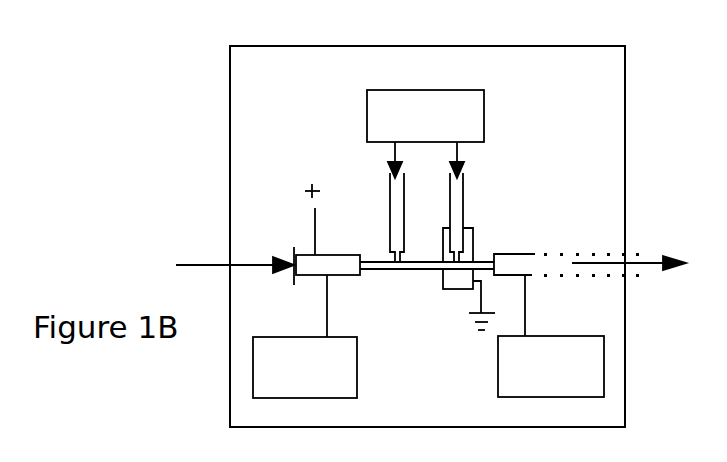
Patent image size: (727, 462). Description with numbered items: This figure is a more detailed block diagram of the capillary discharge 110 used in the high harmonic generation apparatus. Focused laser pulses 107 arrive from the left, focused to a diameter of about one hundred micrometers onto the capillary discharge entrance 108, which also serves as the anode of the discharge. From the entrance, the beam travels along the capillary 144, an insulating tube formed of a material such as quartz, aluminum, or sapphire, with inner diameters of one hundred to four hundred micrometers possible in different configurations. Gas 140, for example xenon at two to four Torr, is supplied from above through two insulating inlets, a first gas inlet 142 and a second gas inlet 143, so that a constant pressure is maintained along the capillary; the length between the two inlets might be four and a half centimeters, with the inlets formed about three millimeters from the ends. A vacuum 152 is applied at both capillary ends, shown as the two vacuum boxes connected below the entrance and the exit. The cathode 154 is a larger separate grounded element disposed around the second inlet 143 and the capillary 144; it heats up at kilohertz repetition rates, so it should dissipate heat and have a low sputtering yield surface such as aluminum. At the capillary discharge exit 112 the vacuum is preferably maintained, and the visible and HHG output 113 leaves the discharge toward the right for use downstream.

The focused laser pulses 107 is at (234, 251).
The capillary discharge entrance 108 is at (343, 281).
The capillary discharge 110 is at (427, 236).
The capillary discharge exit 112 is at (512, 249).
The visible and HHG output 113 is at (629, 246).
The gas 140 is at (425, 134).
The first gas inlet 142 is at (387, 217).
The second gas inlet 143 is at (467, 211).
The capillary 144 is at (434, 271).
The vacuum 152 is at (428, 336).
The cathode 154 is at (455, 292).